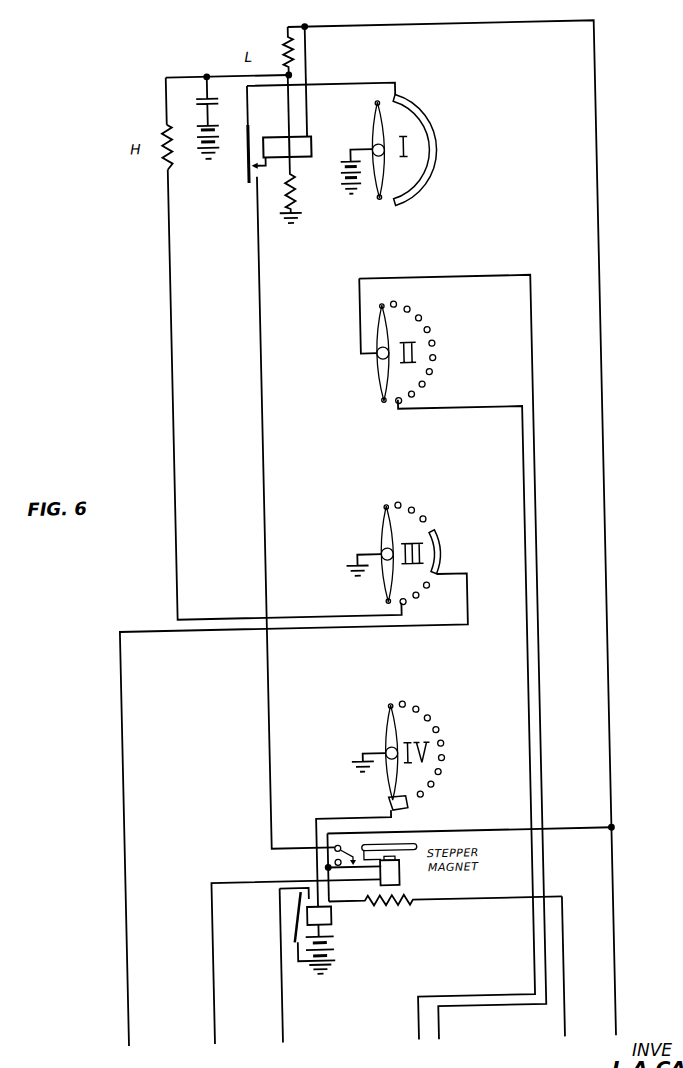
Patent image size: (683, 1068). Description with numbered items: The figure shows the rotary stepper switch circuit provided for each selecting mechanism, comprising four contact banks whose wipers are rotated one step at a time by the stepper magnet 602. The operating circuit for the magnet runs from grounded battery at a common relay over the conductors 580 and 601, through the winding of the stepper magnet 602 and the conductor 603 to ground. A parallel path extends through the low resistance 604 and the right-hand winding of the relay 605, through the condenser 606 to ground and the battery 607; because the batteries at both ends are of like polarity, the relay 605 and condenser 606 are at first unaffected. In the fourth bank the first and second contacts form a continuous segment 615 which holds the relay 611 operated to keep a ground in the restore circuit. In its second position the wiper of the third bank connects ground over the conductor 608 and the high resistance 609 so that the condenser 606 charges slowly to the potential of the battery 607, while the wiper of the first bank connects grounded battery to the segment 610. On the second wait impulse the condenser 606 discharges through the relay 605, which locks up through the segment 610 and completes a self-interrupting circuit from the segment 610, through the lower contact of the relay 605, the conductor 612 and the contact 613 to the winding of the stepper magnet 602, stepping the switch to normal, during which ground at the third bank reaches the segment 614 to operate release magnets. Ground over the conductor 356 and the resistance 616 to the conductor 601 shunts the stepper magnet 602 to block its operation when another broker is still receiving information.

The conductor 356 is at (554, 966).
The conductor 580 is at (606, 967).
The conductor 601 is at (490, 829).
The stepper magnet 602 is at (391, 875).
The conductor 603 is at (204, 958).
The low resistance 604 is at (292, 41).
The relay 605 is at (322, 148).
The condenser 606 is at (207, 95).
The battery 607 is at (229, 141).
The conductor 608 is at (176, 353).
The high resistance 609 is at (173, 167).
The segment 610 is at (436, 126).
The relay 611 is at (318, 919).
The conductor 612 is at (265, 352).
The contact 613 is at (325, 854).
The segment 614 is at (440, 558).
The continuous segment 615 is at (391, 805).
The resistance 616 is at (382, 908).